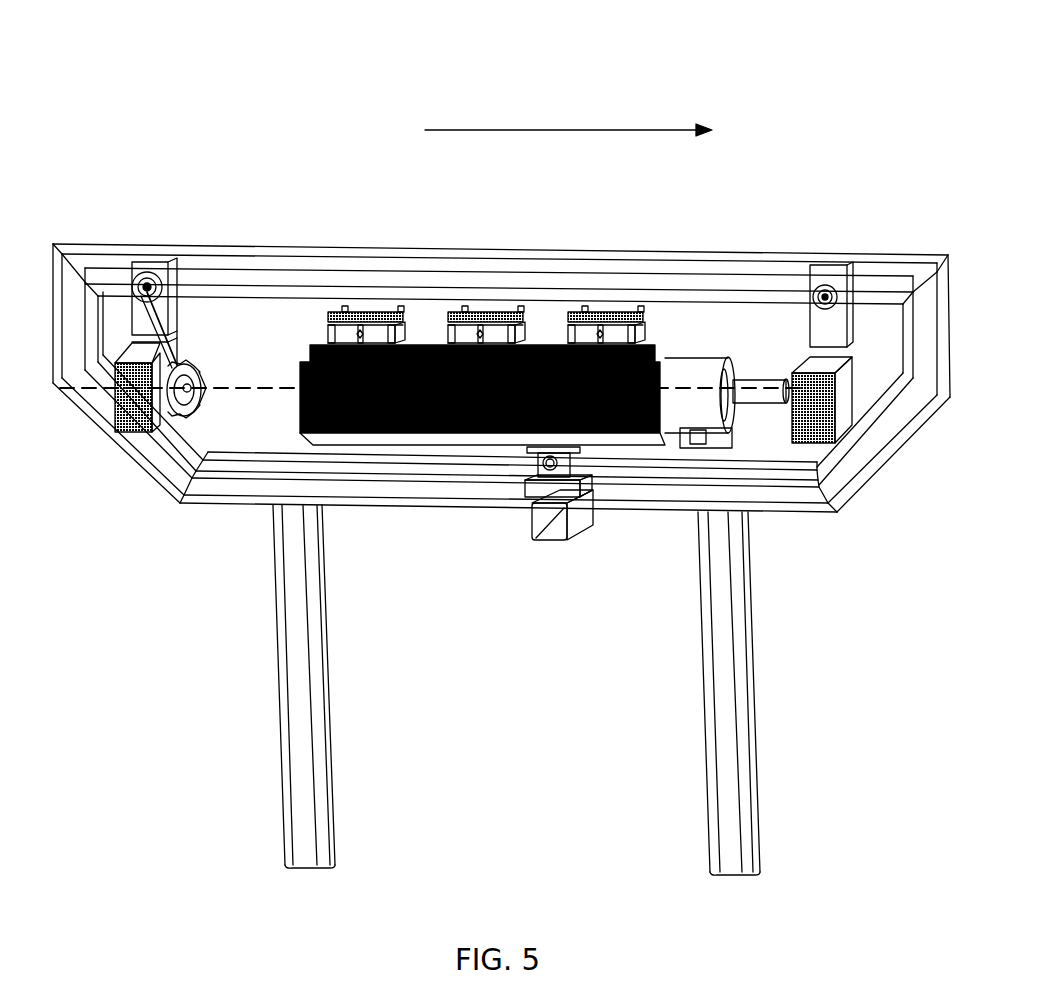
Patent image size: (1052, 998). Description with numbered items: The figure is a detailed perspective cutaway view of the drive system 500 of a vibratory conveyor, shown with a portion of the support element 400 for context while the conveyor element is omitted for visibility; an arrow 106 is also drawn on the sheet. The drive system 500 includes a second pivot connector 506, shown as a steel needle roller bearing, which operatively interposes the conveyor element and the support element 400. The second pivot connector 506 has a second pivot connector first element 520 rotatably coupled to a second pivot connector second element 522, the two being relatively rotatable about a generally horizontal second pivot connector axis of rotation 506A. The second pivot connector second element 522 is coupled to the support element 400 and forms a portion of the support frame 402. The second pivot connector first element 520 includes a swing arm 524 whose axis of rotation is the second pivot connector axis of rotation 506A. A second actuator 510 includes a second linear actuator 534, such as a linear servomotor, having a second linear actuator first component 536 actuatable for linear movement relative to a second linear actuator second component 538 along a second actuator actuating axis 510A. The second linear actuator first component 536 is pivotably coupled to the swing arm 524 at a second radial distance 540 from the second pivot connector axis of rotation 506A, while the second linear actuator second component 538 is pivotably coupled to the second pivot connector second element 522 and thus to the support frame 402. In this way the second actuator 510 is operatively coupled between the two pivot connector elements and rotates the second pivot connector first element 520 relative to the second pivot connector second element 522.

The drive system 500 is at (236, 100).
The direction of travel arrow 106 is at (590, 128).
The support element 400 is at (276, 642).
The support frame 402 is at (213, 483).
The second pivot connector 506 is at (153, 255).
The second pivot connector axis of rotation 506A is at (125, 332).
The second pivot connector second element 522 is at (121, 272).
The second radial distance 540 is at (162, 324).
The second pivot connector first element 520 is at (145, 313).
The swing arm 524 is at (137, 413).
The second actuator 510 is at (406, 458).
The second actuator actuating axis 510A is at (242, 384).
The second linear actuator second component 538 is at (614, 405).
The second linear actuator 534 is at (557, 343).
The second linear actuator first component 536 is at (263, 393).